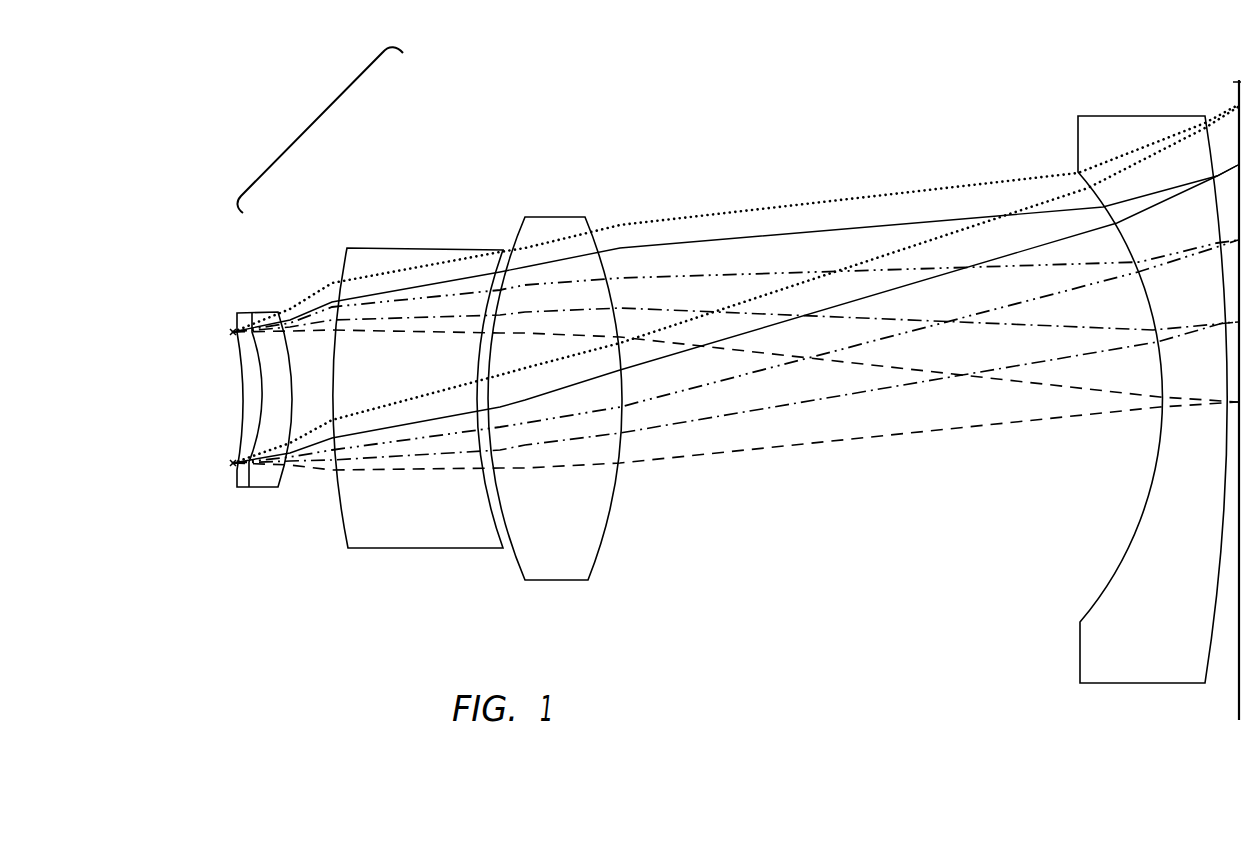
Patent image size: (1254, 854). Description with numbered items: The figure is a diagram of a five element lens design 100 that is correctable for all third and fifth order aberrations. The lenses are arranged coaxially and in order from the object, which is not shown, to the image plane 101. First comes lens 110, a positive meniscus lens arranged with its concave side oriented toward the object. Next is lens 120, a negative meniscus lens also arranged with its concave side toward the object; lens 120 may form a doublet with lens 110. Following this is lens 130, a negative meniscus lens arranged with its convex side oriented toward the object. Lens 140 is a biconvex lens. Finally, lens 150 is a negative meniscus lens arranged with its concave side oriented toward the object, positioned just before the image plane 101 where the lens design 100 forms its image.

The five element lens design 100 is at (307, 125).
The image plane 101 is at (1237, 82).
The lens 110 is at (233, 357).
The lens 120 is at (250, 312).
The lens 130 is at (424, 247).
The lens 140 is at (556, 217).
The lens 150 is at (1125, 116).